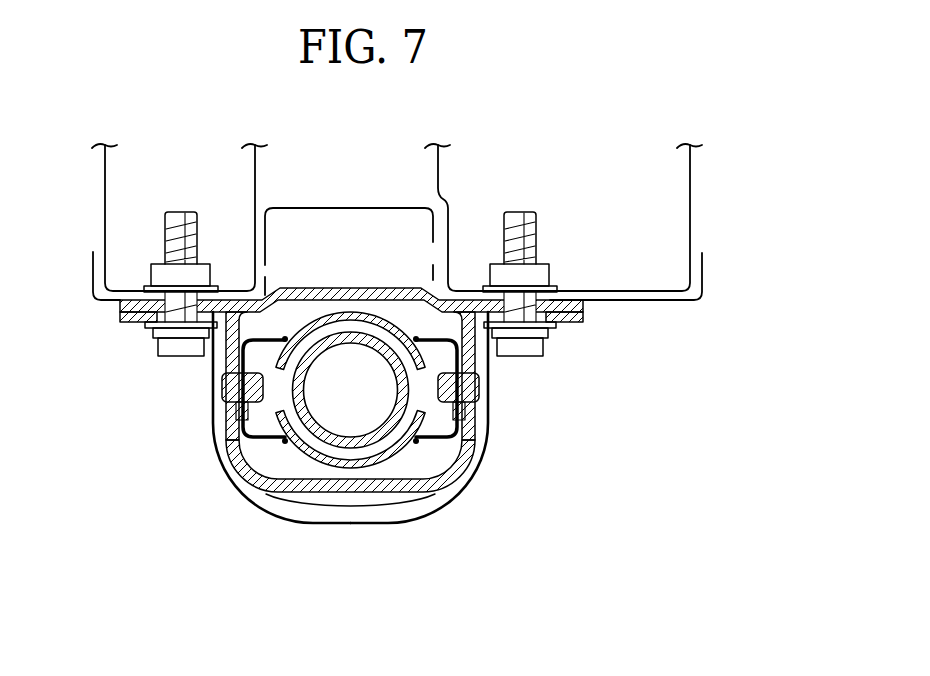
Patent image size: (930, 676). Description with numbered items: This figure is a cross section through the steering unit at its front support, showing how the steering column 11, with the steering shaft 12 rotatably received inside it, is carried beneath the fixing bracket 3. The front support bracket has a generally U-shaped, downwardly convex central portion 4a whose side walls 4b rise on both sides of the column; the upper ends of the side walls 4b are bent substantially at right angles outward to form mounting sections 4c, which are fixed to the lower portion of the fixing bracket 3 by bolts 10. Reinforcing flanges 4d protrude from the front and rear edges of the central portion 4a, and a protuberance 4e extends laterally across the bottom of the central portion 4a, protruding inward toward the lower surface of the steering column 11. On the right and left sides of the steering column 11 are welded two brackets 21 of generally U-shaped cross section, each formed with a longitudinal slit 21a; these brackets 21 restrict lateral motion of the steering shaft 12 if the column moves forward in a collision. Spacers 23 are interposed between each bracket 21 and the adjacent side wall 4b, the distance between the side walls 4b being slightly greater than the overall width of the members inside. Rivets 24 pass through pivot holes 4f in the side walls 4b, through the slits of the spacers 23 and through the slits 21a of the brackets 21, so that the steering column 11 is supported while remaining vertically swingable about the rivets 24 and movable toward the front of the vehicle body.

The fixing bracket 3 is at (692, 191).
The bolts 10 is at (182, 212).
The central portion 4a is at (264, 486).
The side walls 4b is at (225, 357).
The mounting sections 4c is at (132, 323).
The reinforcing flanges 4d is at (216, 473).
The protuberance 4e is at (335, 488).
The pivot holes 4f is at (488, 420).
The steering column 11 is at (381, 437).
The steering shaft 12 is at (396, 437).
The brackets 21 is at (270, 441).
The longitudinal slit 21a is at (452, 432).
The spacers 23 is at (242, 421).
The rivets 24 is at (222, 390).